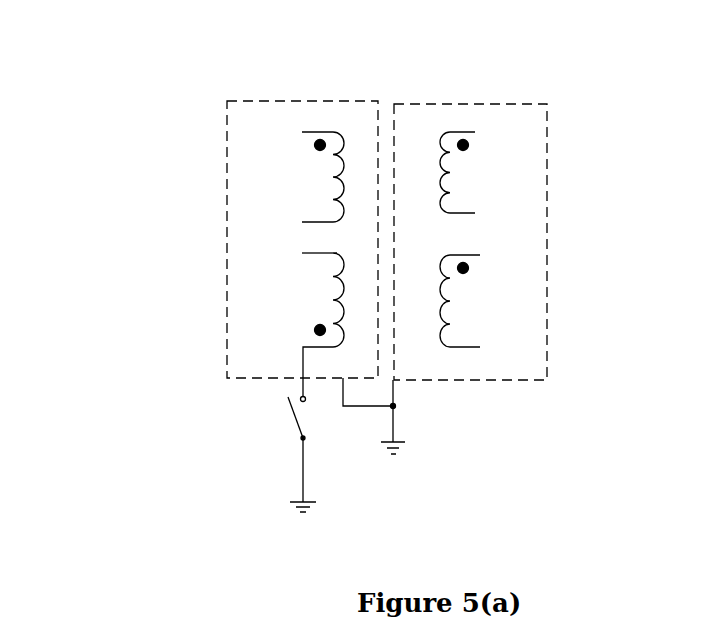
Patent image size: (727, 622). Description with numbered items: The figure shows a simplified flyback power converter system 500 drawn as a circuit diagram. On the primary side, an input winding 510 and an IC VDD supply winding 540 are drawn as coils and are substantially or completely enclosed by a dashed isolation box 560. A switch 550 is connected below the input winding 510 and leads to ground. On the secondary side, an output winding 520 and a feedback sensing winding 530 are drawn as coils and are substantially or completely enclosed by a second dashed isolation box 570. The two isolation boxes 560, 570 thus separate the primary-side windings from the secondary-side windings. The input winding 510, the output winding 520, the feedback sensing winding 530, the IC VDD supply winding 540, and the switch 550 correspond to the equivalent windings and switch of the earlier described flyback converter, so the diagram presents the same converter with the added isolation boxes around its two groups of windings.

The flyback power converter system 500 is at (99, 59).
The input winding 510 is at (345, 253).
The output winding 520 is at (445, 214).
The feedback sensing winding 530 is at (445, 342).
The IC VDD supply winding 540 is at (346, 142).
The switch 550 is at (297, 425).
The isolation box 560 is at (292, 101).
The isolation box 570 is at (478, 104).